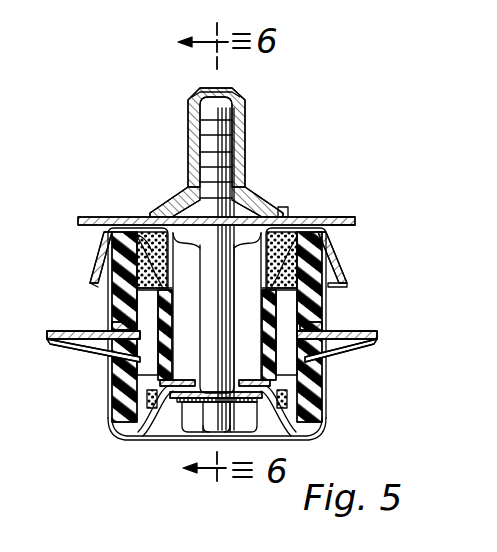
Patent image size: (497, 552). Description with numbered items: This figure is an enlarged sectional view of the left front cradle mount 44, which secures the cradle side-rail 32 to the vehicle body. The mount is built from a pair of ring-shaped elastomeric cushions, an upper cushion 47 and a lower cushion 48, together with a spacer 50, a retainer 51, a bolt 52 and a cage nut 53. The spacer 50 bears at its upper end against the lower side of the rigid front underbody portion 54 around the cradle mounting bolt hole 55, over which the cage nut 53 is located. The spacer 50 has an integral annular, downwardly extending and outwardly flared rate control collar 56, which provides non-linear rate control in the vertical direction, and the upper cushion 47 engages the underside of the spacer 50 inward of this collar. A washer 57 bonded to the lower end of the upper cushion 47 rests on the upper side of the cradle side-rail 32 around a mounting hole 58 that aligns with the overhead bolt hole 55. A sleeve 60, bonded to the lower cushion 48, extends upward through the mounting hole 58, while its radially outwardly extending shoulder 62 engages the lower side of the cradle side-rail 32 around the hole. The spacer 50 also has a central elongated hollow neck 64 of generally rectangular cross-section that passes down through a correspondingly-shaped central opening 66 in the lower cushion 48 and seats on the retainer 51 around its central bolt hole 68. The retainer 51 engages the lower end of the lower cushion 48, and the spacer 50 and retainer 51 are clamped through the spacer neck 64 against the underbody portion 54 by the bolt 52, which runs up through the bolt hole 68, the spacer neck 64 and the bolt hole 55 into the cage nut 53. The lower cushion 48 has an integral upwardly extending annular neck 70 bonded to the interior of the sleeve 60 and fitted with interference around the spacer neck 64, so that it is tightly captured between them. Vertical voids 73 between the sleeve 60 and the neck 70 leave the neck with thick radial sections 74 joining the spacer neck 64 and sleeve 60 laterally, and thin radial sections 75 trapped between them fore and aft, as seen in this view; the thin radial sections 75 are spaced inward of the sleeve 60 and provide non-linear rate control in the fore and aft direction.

The cradle side-rail 32 is at (377, 335).
The left front cradle mount 44 is at (249, 138).
The upper cushion 47 is at (110, 307).
The lower cushion 48 is at (123, 370).
The spacer 50 is at (110, 238).
The retainer 51 is at (128, 440).
The bolt 52 is at (197, 418).
The cage nut 53 is at (247, 100).
The rigid front underbody portion 54 is at (353, 219).
The cradle mounting bolt hole 55 is at (193, 197).
The rate control collar 56 is at (98, 270).
The washer 57 is at (320, 323).
The mounting hole 58 is at (313, 367).
The sleeve 60 is at (112, 322).
The shoulder 62 is at (118, 344).
The spacer neck 64 is at (293, 227).
The central opening 66 is at (167, 378).
The central bolt hole 68 is at (217, 313).
The annular neck 70 is at (138, 233).
The voids 73 is at (123, 220).
The thick radial sections 74 is at (330, 258).
The thin radial sections 75 is at (137, 230).